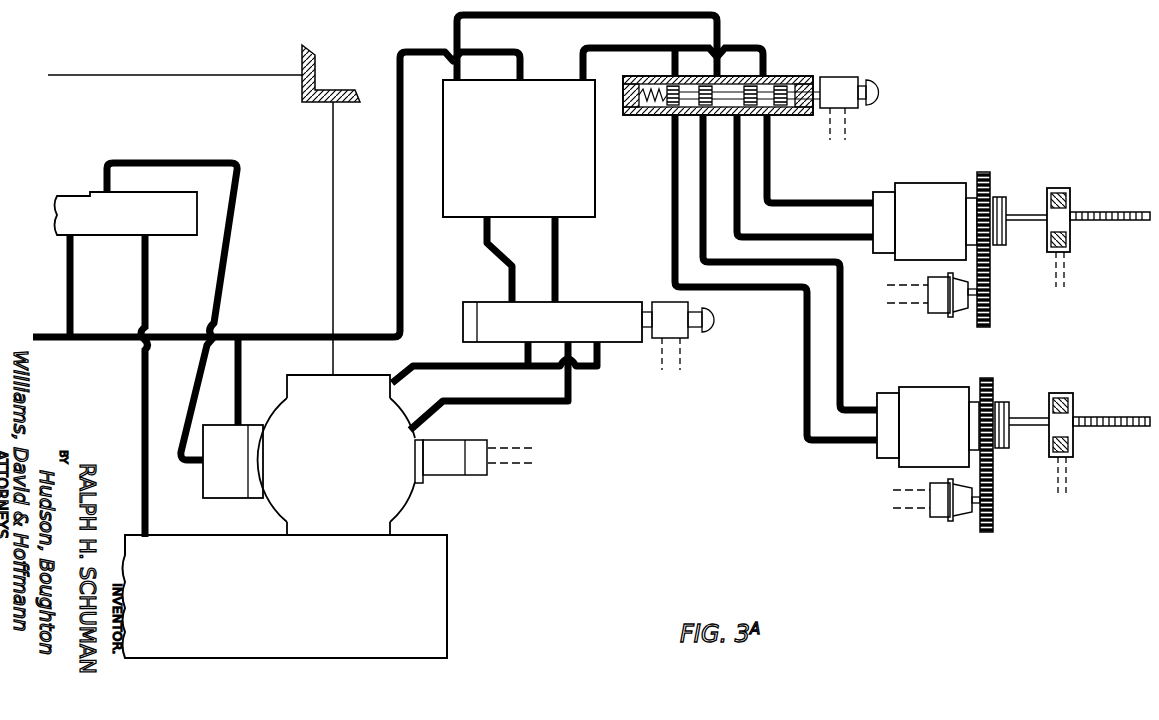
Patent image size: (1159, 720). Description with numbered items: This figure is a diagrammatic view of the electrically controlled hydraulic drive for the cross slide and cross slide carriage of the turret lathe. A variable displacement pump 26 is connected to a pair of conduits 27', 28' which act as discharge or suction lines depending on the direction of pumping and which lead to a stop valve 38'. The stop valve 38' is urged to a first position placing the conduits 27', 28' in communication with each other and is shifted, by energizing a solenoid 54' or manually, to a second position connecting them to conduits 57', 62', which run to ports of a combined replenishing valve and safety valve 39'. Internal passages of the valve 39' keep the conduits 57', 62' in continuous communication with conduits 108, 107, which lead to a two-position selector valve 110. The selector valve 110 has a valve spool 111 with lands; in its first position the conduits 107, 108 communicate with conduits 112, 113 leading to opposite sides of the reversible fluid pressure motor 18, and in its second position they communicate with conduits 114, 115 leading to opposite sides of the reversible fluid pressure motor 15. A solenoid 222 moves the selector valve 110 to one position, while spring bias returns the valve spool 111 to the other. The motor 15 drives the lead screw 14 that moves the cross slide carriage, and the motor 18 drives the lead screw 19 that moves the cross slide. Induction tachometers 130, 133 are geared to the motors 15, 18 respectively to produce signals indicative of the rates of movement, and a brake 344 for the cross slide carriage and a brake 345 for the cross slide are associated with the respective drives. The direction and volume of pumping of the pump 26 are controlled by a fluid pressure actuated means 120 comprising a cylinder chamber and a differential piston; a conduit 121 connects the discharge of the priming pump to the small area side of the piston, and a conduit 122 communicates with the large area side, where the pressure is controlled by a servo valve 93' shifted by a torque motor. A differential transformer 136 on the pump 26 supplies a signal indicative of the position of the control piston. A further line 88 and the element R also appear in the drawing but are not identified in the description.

The servo valve 93' is at (122, 199).
The conduit 122 is at (213, 284).
The conduit 88 is at (270, 335).
The conduit 121 is at (242, 371).
The conduit 108 is at (537, 26).
The conduit 107 is at (601, 48).
The combined replenishing valve and safety valve 39' is at (548, 148).
The selector valve 110 is at (733, 63).
The valve spool 111 is at (772, 76).
The solenoid 222 is at (858, 78).
The conduit 112 is at (771, 196).
The conduit 113 is at (743, 222).
The conduit 114 is at (672, 211).
The conduit 115 is at (710, 251).
The reversible fluid pressure motor 18 is at (917, 192).
The brake 345 is at (1058, 190).
The lead screw 19 is at (1112, 212).
The induction tachometer 133 is at (930, 313).
The reversible fluid pressure motor 15 is at (922, 406).
The brake 344 is at (1068, 382).
The lead screw 14 is at (1113, 417).
The induction tachometer 130 is at (938, 517).
The conduit 57' is at (512, 259).
The conduit 62' is at (580, 259).
The conduit 28' is at (494, 361).
The conduit 27' is at (486, 386).
The stop valve 38' is at (558, 346).
The solenoid 54' is at (675, 317).
The variable displacement pump 26 is at (379, 521).
The fluid pressure actuated means 120 is at (219, 486).
The differential transformer 136 is at (469, 440).
The reservoir base R is at (425, 602).